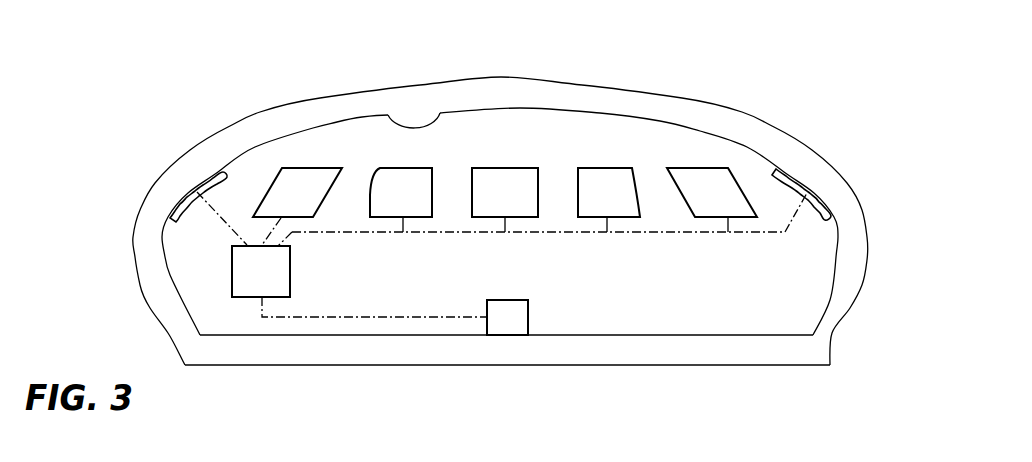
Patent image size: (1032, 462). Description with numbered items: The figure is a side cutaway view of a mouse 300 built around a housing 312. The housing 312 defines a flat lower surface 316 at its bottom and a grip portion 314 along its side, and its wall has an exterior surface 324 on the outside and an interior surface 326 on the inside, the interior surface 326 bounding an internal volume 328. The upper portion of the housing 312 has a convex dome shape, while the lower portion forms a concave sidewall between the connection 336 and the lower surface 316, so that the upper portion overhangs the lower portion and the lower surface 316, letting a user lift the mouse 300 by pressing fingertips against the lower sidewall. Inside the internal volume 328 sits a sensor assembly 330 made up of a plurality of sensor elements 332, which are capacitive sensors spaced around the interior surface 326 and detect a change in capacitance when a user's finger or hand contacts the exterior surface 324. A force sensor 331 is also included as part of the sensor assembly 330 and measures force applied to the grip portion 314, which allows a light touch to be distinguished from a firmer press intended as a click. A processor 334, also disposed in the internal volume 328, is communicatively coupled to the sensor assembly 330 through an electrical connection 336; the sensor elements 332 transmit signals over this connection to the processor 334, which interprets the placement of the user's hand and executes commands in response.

The mouse 300 is at (857, 142).
The housing 312 is at (695, 110).
The grip portion 314 is at (785, 142).
The lower surface 316 is at (668, 365).
The exterior surface 324 is at (497, 78).
The interior surface 326 is at (390, 120).
The internal volume 328 is at (785, 310).
The sensor assembly 330 is at (378, 172).
The force sensor 331 is at (525, 190).
The sensor elements 332 is at (205, 175).
The processor 334 is at (242, 276).
The electrical connection 336 is at (370, 232).